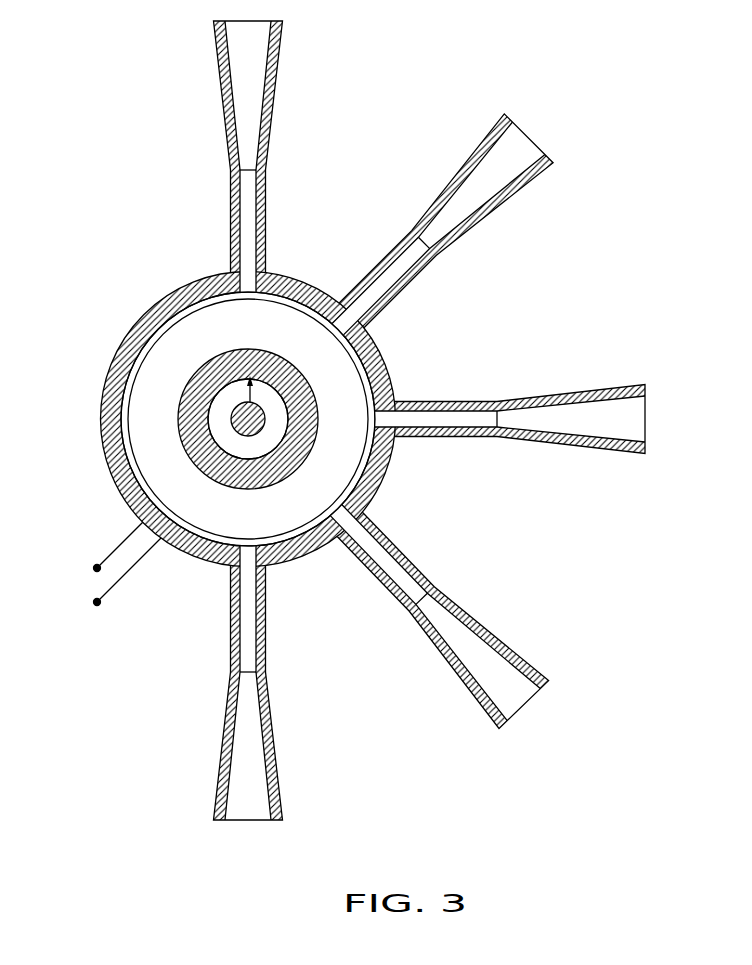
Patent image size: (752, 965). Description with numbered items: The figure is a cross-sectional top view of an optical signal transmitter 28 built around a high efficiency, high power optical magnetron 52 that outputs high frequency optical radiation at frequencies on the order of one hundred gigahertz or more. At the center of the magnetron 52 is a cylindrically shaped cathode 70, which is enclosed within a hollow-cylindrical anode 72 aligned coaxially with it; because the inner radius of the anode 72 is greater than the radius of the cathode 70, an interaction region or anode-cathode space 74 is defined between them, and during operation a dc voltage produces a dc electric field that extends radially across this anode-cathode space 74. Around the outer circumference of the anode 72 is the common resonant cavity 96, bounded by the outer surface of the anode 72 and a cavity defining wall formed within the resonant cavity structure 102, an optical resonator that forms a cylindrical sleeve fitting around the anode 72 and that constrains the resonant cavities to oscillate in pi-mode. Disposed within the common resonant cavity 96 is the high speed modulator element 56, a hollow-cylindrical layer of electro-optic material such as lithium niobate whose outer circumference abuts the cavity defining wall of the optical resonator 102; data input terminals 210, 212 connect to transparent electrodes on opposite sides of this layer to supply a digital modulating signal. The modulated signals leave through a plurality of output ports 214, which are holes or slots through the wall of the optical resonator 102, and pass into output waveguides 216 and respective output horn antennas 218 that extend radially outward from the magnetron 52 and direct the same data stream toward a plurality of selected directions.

The optical signal transmitter 28 is at (100, 148).
The optical magnetron 52 is at (206, 272).
The high speed modulator element 56 is at (371, 373).
The cathode 70 is at (200, 466).
The anode 72 is at (246, 436).
The anode-cathode space 74 is at (216, 425).
The common resonant cavity 96 is at (170, 373).
The resonant cavity structure 102 is at (148, 308).
The data input terminal 210 is at (94, 564).
The data input terminal 212 is at (130, 570).
The output port 214 is at (266, 285).
The output waveguide 216 is at (265, 230).
The output antenna 218 is at (275, 106).